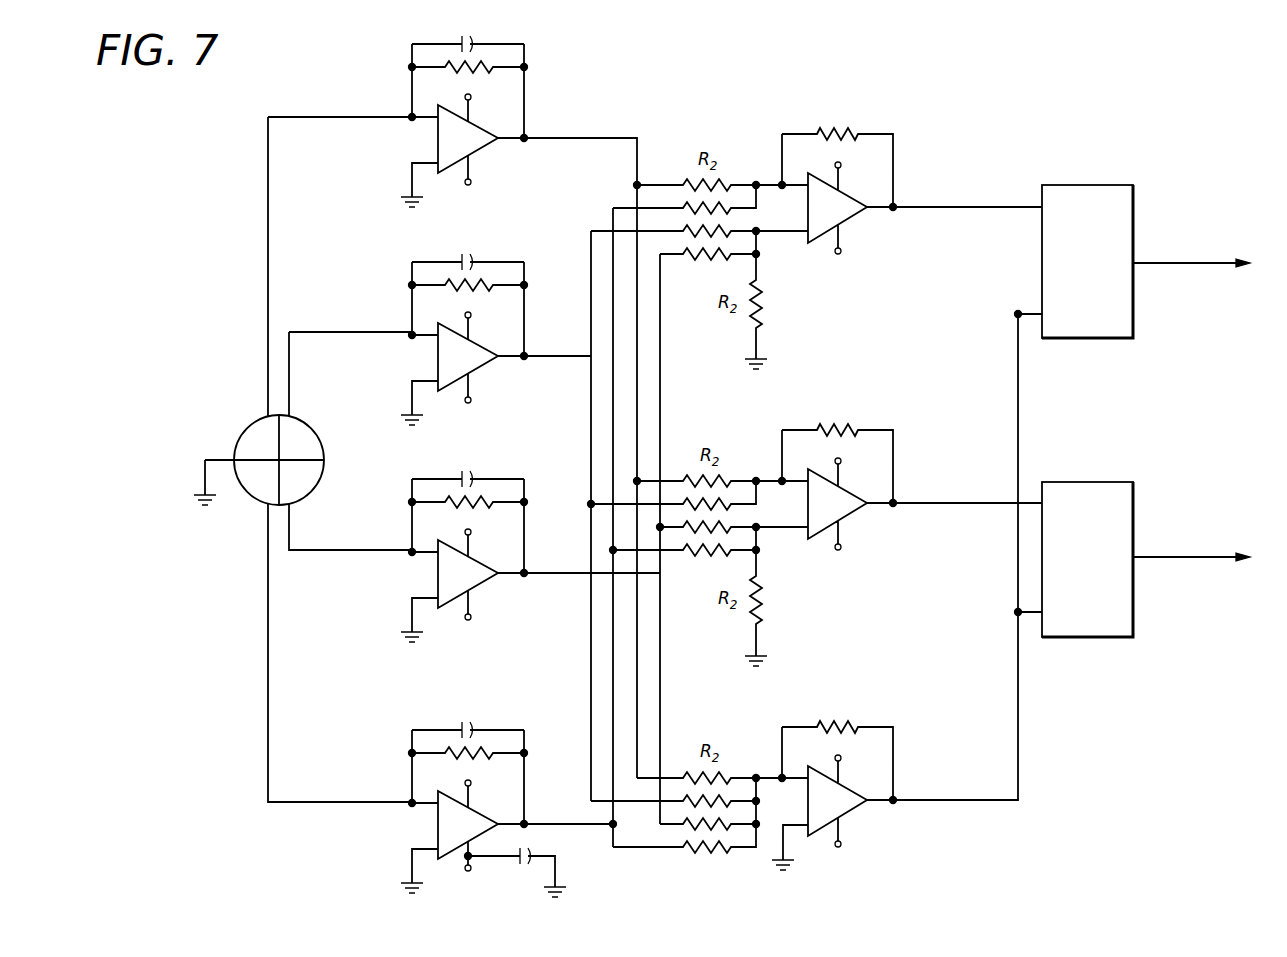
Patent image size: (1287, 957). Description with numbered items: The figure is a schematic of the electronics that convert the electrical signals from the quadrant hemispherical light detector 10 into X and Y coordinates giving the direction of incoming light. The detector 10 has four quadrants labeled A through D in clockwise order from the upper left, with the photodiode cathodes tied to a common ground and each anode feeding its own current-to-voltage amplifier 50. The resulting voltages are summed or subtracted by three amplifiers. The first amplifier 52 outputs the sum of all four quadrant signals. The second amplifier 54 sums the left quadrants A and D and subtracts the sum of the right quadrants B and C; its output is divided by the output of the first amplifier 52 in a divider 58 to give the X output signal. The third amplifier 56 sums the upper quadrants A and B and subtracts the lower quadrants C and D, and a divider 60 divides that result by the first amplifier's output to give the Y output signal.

The quadrant hemispherical light detector 10 is at (240, 432).
The current-to-voltage amplifier 50 is at (497, 155).
The first amplifier 52 is at (858, 838).
The second amplifier 54 is at (853, 236).
The third amplifier 56 is at (850, 535).
The divider 58 is at (1073, 339).
The divider 60 is at (1085, 638).